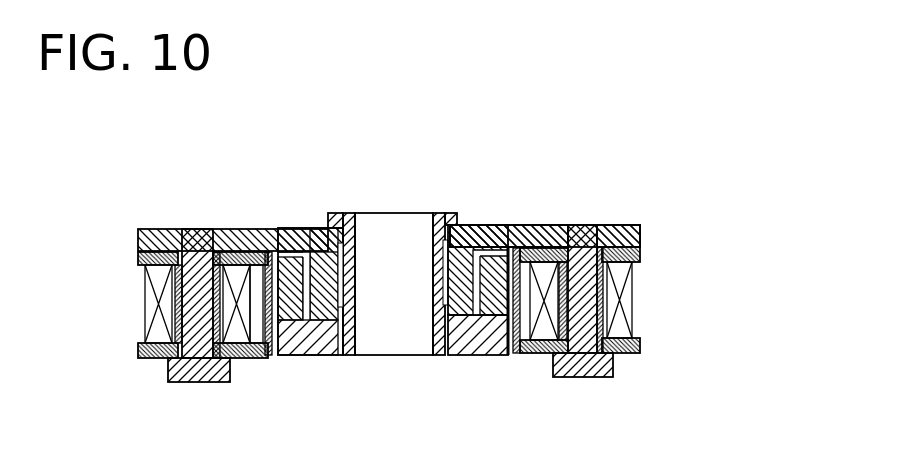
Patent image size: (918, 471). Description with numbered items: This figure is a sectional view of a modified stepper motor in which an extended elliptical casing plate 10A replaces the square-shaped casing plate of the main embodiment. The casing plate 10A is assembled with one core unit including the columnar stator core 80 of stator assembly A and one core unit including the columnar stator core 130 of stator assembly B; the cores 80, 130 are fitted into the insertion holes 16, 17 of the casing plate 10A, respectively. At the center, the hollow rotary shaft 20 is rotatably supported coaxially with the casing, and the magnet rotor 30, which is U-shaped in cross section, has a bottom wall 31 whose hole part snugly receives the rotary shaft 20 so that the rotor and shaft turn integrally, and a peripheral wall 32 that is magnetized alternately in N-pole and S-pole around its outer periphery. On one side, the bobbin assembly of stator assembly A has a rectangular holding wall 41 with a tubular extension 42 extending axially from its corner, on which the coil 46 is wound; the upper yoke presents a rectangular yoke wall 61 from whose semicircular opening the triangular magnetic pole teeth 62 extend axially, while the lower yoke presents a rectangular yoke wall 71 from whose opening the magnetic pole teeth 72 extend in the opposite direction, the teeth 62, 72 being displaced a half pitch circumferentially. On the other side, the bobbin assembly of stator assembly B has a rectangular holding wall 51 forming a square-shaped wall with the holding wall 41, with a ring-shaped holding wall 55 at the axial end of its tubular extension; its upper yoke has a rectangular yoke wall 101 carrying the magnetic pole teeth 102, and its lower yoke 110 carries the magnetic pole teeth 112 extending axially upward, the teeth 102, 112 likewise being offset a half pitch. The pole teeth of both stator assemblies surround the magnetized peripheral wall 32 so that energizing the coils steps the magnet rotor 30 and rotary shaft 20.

The casing plate 10A is at (480, 225).
The insertion hole 16 is at (193, 229).
The insertion hole 17 is at (585, 225).
The rotary shaft 20 is at (398, 337).
The magnet rotor 30 is at (468, 352).
The bottom wall 31 is at (323, 358).
The peripheral wall 32 is at (307, 229).
The holding wall 41 is at (232, 229).
The tubular extension 42 is at (145, 296).
The coil 46 is at (140, 330).
The holding wall 51 is at (625, 225).
The ring-shaped holding wall 55 is at (633, 302).
The yoke wall 61 is at (138, 254).
The magnetic pole teeth 62 is at (278, 229).
The yoke wall 71 is at (247, 358).
The magnetic pole teeth 72 is at (280, 358).
The stator core 80 is at (195, 365).
The yoke wall 101 is at (640, 248).
The magnetic pole teeth 102 is at (520, 225).
The lower yoke 110 is at (640, 355).
The magnetic pole teeth 112 is at (518, 355).
The stator core 130 is at (585, 345).